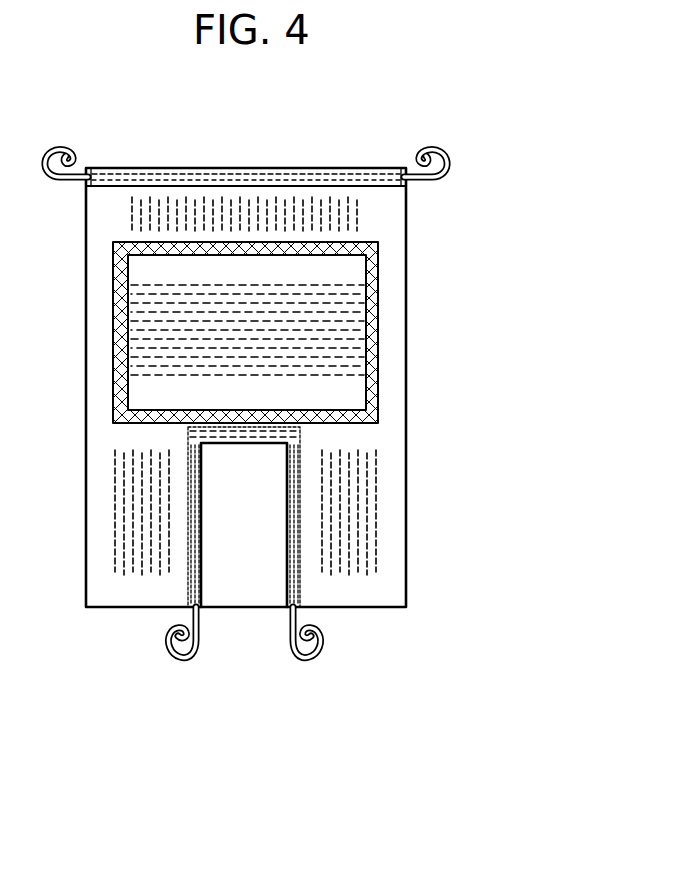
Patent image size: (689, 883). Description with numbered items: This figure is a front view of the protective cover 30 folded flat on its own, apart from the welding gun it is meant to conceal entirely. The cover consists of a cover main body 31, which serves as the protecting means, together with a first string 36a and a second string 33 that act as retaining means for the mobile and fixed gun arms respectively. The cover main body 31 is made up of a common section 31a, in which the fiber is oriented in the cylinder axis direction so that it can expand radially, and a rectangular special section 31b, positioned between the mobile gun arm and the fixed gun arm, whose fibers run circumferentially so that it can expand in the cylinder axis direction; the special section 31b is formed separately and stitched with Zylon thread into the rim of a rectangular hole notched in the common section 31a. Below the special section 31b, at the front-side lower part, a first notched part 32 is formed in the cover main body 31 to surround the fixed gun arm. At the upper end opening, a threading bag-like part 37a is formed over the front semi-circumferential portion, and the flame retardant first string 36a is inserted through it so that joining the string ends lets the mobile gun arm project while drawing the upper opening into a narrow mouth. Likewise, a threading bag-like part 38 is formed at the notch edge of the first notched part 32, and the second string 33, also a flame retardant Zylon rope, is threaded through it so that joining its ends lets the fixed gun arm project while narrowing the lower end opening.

The protective cover 30 is at (334, 387).
The cover main body 31 is at (407, 393).
The common section 31a is at (398, 211).
The special section 31b is at (335, 309).
The first notched part 32 is at (280, 562).
The second string 33 is at (183, 655).
The first string 36a is at (447, 158).
The threading bag-like part 37a is at (248, 167).
The threading bag-like part 38 is at (212, 552).